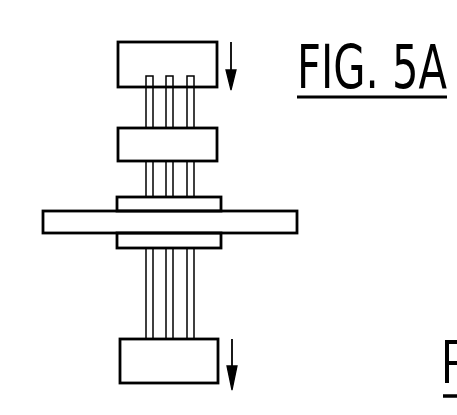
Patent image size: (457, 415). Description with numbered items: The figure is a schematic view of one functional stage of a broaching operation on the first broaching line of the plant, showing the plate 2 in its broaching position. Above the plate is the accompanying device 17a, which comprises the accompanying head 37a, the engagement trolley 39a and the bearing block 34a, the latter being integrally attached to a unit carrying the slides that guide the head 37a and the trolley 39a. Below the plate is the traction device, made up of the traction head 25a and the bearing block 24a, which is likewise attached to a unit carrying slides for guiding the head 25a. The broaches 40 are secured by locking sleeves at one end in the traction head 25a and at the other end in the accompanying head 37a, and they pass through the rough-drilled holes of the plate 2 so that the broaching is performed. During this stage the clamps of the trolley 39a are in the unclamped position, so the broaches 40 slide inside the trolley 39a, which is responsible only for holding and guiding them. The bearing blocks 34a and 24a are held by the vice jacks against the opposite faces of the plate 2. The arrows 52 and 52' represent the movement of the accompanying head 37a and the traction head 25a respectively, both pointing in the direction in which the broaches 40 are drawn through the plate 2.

The accompanying device 17a is at (86, 100).
The accompanying head 37a is at (167, 64).
The engagement trolley 39a is at (218, 148).
The bearing block 34a is at (221, 203).
The plate 2 is at (297, 222).
The bearing block 24a is at (208, 248).
The broaches 40 is at (195, 284).
The traction head 25a is at (169, 361).
The arrow 52 is at (239, 45).
The arrow 52' is at (260, 364).